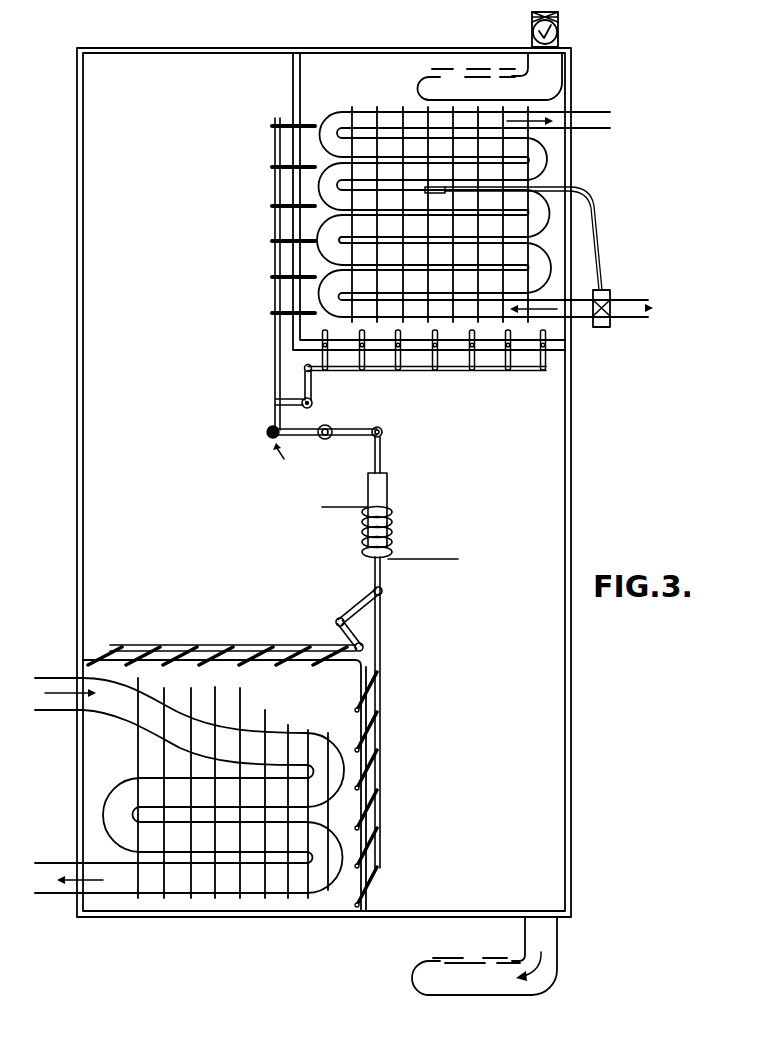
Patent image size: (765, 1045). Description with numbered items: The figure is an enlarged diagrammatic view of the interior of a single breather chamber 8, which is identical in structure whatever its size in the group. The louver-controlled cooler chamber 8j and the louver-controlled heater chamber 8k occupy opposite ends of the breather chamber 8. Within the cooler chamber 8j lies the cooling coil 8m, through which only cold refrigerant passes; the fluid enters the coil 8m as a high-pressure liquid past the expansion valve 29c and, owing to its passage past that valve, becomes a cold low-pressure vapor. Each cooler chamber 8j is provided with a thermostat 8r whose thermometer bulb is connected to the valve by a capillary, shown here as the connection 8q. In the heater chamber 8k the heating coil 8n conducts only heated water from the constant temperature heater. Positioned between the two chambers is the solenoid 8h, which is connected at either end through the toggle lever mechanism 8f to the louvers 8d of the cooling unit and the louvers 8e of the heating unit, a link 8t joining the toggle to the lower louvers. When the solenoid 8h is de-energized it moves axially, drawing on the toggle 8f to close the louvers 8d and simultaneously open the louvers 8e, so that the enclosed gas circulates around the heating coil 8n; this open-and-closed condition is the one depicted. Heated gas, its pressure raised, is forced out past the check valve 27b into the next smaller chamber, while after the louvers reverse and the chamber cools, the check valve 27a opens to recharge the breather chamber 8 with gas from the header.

The breather chamber 8 is at (77, 347).
The louvers of the cooling unit 8d is at (275, 262).
The louvers of the heating unit 8e is at (468, 370).
The toggle lever mechanism 8f is at (343, 428).
The solenoid 8h is at (392, 522).
The cooler chamber 8j is at (561, 328).
The heater chamber 8k is at (221, 695).
The cooling coil 8m is at (548, 159).
The heating coil 8n is at (103, 814).
The thermostat connection wire 8q is at (599, 248).
The thermostat 8r is at (435, 181).
The linkage 8t is at (347, 628).
The check valve 27a is at (420, 72).
The check valve 27b is at (425, 957).
The expansion valve 29c is at (607, 292).